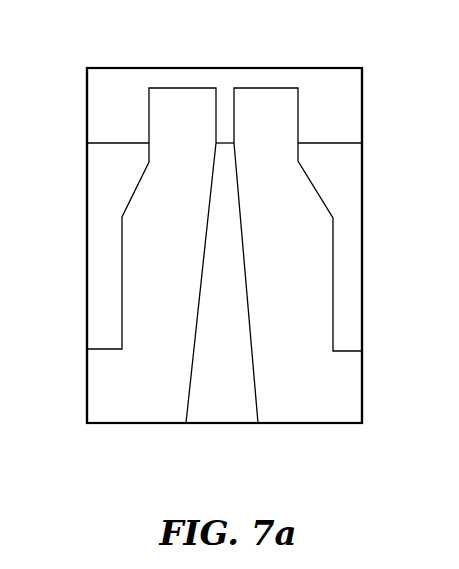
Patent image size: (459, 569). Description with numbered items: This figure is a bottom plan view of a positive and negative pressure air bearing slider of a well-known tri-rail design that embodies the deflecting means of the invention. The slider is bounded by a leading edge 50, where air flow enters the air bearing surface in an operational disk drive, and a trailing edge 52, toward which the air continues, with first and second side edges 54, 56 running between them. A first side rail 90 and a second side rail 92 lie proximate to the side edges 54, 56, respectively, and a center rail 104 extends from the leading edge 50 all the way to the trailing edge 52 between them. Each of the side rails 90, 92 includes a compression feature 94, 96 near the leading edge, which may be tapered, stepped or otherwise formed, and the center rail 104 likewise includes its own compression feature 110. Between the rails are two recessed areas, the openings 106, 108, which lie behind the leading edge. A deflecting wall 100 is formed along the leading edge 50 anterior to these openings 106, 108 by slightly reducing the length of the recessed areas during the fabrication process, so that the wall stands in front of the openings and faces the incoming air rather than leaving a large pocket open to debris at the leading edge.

The leading edge 50 is at (335, 68).
The deflecting wall 100 is at (189, 68).
The trailing edge 52 is at (312, 424).
The first side edge 54 is at (87, 380).
The second side edge 56 is at (362, 391).
The compression feature 94 is at (87, 111).
The compression feature 96 is at (355, 122).
The compression feature 110 is at (227, 118).
The first side rail 90 is at (87, 225).
The second side rail 92 is at (355, 242).
The opening 106 is at (148, 235).
The opening 108 is at (265, 237).
The center rail 104 is at (202, 390).